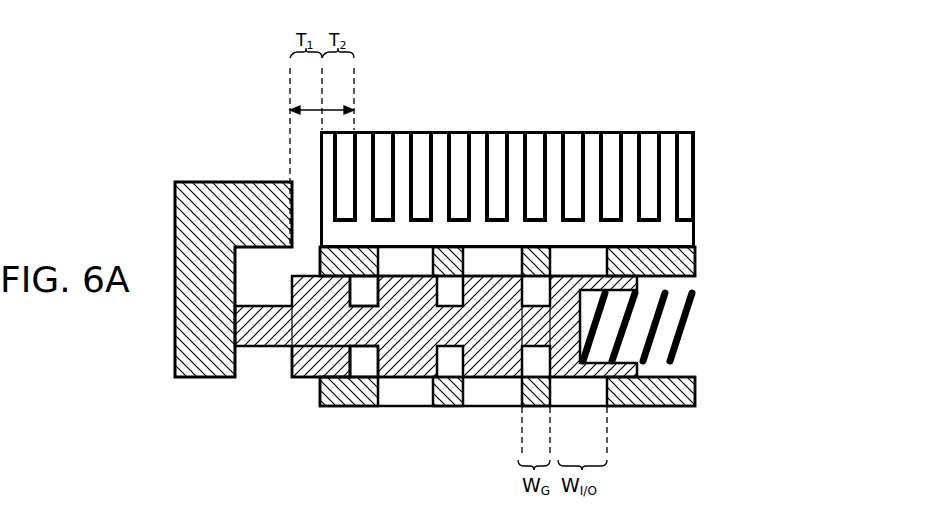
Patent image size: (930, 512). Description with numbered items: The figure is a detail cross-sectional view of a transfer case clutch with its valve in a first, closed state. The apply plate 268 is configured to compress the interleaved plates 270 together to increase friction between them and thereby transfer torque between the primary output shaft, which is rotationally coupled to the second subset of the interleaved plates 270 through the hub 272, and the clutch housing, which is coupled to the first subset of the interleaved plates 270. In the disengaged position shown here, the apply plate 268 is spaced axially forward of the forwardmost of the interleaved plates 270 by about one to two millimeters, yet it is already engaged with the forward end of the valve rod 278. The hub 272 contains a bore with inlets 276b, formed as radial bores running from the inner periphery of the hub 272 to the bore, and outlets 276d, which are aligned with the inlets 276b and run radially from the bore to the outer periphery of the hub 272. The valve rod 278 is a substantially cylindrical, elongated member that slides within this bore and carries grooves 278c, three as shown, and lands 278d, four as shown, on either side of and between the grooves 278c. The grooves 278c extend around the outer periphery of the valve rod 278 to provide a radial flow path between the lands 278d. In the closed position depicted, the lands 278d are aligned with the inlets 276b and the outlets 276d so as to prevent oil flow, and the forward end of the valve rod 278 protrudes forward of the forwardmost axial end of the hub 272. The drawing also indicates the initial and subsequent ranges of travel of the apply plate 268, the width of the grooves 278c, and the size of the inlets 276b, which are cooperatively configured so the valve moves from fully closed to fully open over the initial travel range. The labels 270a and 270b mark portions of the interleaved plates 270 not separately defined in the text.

The apply plate 268 is at (203, 358).
The interleaved plates 270 is at (508, 129).
The channels between fingers 270a is at (513, 138).
The finger slots 270b is at (537, 52).
The hub 272 is at (682, 267).
The inlets 276b is at (492, 393).
The outlets 276d is at (575, 260).
The valve rod 278 is at (306, 312).
The grooves 278c is at (370, 357).
The lands 278d is at (320, 358).